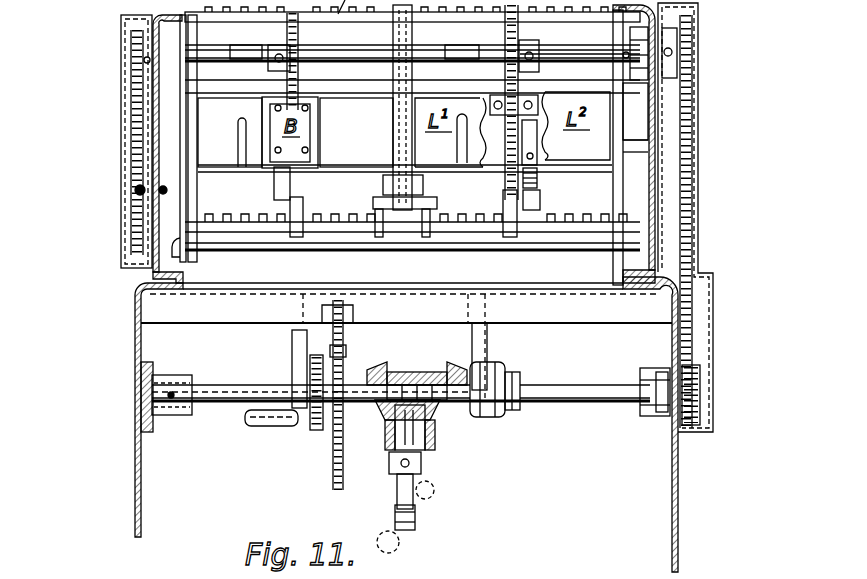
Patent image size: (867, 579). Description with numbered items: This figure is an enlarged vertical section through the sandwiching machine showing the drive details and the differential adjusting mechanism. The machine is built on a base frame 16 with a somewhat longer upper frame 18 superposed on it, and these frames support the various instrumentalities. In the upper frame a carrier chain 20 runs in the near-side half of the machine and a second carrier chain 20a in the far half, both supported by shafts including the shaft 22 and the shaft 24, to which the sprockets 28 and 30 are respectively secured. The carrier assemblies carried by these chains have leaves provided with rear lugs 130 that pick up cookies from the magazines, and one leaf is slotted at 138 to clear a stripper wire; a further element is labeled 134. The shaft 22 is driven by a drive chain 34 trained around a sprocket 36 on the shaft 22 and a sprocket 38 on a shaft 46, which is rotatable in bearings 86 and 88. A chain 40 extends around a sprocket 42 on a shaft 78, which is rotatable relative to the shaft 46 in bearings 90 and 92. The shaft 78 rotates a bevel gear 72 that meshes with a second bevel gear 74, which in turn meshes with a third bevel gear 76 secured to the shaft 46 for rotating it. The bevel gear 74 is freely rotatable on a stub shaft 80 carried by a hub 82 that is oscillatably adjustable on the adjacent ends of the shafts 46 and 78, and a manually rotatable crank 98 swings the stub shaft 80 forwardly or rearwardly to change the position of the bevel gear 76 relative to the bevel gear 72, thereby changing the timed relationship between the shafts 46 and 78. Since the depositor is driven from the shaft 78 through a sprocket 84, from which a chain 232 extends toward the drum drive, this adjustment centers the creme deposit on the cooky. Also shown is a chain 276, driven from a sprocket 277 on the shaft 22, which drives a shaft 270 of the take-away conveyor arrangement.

The base frame 16 is at (135, 341).
The upper frame 18 is at (655, 135).
The carrier chain 20 is at (308, 48).
The second carrier chain 20a is at (490, 68).
The shaft 22 is at (595, 47).
The shaft 24 is at (643, 153).
The sprocket 28 is at (268, 68).
The sprocket 30 is at (275, 180).
The drive chain 34 is at (693, 193).
The sprocket 36 is at (697, 67).
The sprocket 38 is at (701, 413).
The chain 40 is at (333, 483).
The sprocket 42 is at (347, 350).
The shaft 46 is at (588, 384).
The bevel gear 72 is at (383, 365).
The second bevel gear 74 is at (432, 432).
The third bevel gear 76 is at (452, 347).
The shaft 78 is at (232, 392).
The stub shaft 80 is at (412, 497).
The hub 82 is at (413, 367).
The sprocket 84 is at (298, 368).
The bearing 86 is at (661, 418).
The bearing 88 is at (498, 418).
The bearing 90 is at (298, 397).
The bearing 92 is at (158, 417).
The crank 98 is at (385, 531).
The rear lugs 130 is at (238, 235).
The slot 134 is at (26, 0).
The slot 138 is at (241, 20).
The chain 232 is at (316, 427).
The shaft 270 is at (157, 190).
The chain 276 is at (131, 126).
The sprocket 277 is at (135, 72).